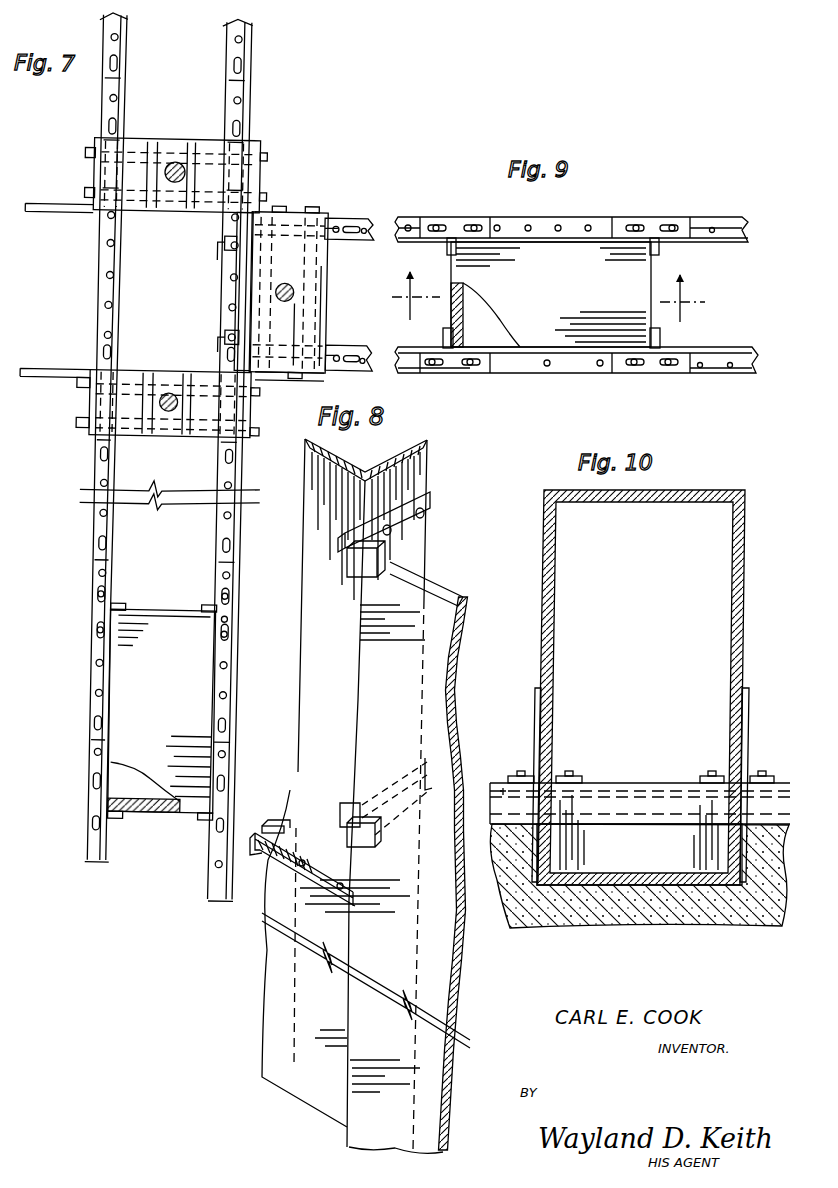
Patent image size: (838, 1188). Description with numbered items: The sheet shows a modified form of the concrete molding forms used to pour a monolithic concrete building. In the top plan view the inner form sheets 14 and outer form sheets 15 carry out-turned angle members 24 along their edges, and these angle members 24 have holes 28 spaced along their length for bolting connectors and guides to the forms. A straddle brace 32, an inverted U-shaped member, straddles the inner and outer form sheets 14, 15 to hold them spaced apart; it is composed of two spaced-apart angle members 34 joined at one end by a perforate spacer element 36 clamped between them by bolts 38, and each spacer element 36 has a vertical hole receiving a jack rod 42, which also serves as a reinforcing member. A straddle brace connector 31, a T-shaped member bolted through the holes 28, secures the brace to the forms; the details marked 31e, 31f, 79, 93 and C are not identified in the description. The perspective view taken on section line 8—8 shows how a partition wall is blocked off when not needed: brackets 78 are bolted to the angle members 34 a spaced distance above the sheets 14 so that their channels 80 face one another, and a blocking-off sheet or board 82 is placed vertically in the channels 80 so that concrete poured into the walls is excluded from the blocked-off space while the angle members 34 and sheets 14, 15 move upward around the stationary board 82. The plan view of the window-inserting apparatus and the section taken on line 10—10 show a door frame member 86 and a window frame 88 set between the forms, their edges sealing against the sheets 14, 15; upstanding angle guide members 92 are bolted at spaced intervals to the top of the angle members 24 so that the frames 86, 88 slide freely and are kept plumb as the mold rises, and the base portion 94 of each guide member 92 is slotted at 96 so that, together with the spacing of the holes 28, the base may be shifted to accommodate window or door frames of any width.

In FIG. 7, the section line 8— 8 is at (190, 225).
In FIG. 9, the section line 10— 10 is at (392, 297).
In FIG. 7, the inner form sheets 14 is at (234, 479).
In FIG. 8, the inner form sheets 14 is at (278, 970).
In FIG. 9, the inner form sheets 14 is at (735, 346).
In FIG. 7, the outer form sheets 15 is at (114, 312).
In FIG. 9, the outer form sheets 15 is at (735, 244).
In FIG. 10, the outer form sheets 15 is at (505, 783).
In FIG. 7, the out-turned angle member 24 is at (103, 736).
In FIG. 9, the out-turned angle member 24 is at (720, 232).
In FIG. 10, the out-turned angle member 24 is at (652, 783).
In FIG. 7, the holes 28 is at (242, 540).
In FIG. 9, the holes 28 is at (576, 372).
In FIG. 8, the straddle brace connector 31 is at (283, 826).
In FIG. 8, the bar flange 31e is at (280, 825).
In FIG. 8, the bar end 31f is at (282, 850).
In FIG. 7, the straddle brace 32 is at (281, 206).
In FIG. 7, the angle members 34 is at (34, 214).
In FIG. 8, the angle members 34 is at (305, 718).
In FIG. 7, the perforate spacer element 36 is at (170, 142).
In FIG. 7, the bolts 38 is at (88, 193).
In FIG. 7, the vertical jack rod 42 is at (186, 163).
In FIG. 7, the brackets 78 is at (232, 249).
In FIG. 8, the brackets 78 is at (432, 512).
In FIG. 8, the screw hole 79 is at (424, 514).
In FIG. 8, the channels 80 is at (365, 577).
In FIG. 7, the blocking-off sheet 82 is at (240, 291).
In FIG. 8, the blocking-off sheet 82 is at (440, 585).
In FIG. 7, the door frame member 86 is at (133, 661).
In FIG. 9, the window frame 88 is at (575, 262).
In FIG. 10, the window frame 88 is at (745, 565).
In FIG. 7, the upstanding angle guide members 92 is at (220, 606).
In FIG. 9, the upstanding angle guide members 92 is at (446, 254).
In FIG. 10, the upstanding angle guide members 92 is at (545, 706).
In FIG. 7, the bolt 93 is at (246, 596).
In FIG. 9, the bolt 93 is at (470, 230).
In FIG. 10, the bolt 93 is at (530, 776).
In FIG. 7, the base portion 94 is at (108, 596).
In FIG. 9, the base portion 94 is at (444, 228).
In FIG. 10, the base portion 94 is at (578, 778).
In FIG. 7, the slots 96 is at (246, 634).
In FIG. 9, the slots 96 is at (634, 230).
In FIG. 10, the concrete C is at (668, 924).